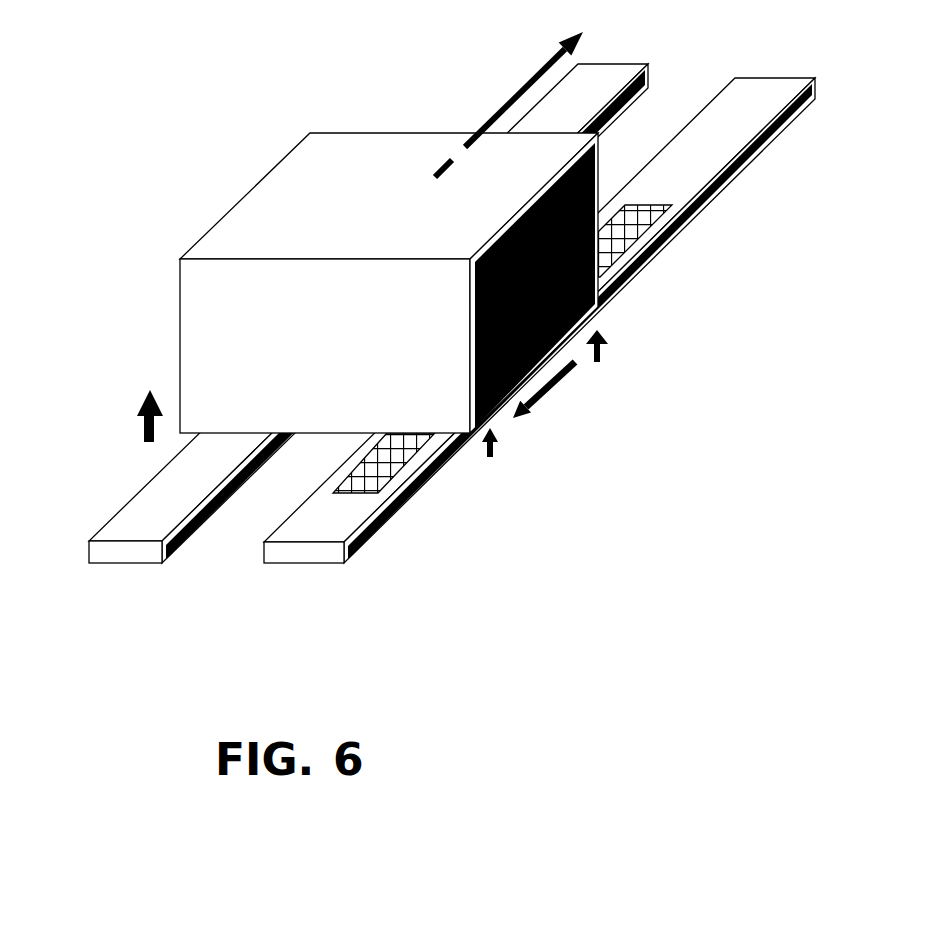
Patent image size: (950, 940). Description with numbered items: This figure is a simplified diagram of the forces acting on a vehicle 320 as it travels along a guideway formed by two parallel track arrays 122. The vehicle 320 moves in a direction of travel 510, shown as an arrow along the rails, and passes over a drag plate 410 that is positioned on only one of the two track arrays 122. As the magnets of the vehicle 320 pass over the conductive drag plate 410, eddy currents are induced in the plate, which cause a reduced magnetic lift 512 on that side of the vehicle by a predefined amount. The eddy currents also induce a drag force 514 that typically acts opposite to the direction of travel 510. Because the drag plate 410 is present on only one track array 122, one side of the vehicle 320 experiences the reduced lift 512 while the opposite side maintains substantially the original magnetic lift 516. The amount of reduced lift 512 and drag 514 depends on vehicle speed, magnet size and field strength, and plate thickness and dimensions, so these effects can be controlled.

The track arrays 122 is at (705, 203).
The vehicle 320 is at (333, 168).
The drag plate 410 is at (378, 468).
The direction of travel 510 is at (498, 113).
The reduced magnetic lift 512 is at (597, 363).
The drag force 514 is at (547, 395).
The original magnetic lift 516 is at (137, 414).